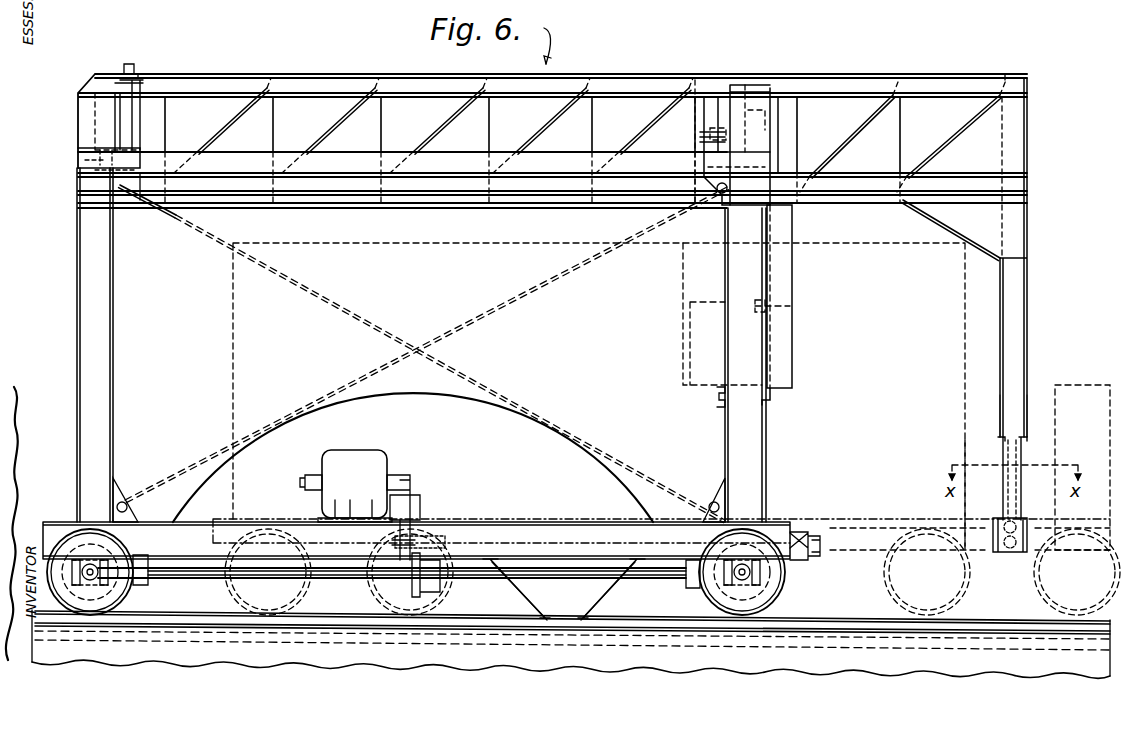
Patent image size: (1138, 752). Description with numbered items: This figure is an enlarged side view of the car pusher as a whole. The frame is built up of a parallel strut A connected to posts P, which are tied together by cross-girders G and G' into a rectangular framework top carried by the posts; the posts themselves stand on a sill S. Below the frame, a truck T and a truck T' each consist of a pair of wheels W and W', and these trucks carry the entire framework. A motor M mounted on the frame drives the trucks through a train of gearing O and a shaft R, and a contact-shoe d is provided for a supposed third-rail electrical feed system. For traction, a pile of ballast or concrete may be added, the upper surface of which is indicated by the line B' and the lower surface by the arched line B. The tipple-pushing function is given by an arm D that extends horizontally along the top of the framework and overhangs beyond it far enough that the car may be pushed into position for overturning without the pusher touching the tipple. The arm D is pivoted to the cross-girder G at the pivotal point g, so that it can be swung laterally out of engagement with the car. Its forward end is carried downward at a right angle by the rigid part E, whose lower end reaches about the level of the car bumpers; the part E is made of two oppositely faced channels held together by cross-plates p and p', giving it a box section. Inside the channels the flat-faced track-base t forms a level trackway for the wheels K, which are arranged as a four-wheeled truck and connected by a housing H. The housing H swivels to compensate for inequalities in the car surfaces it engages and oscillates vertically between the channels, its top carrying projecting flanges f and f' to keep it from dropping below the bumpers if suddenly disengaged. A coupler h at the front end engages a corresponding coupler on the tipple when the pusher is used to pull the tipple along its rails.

The parallel strut A is at (364, 161).
The lower surface line of ballast B is at (413, 434).
The upper surface line of ballast B' is at (552, 198).
The arm D is at (942, 72).
The rigid downward part E is at (1015, 349).
The cross-girder G is at (89, 140).
The cross-girder G' is at (758, 242).
The pivotal point g is at (137, 65).
The post P is at (98, 386).
The cross-plate p is at (982, 406).
The cross-plate p' is at (1044, 396).
The track-base t is at (1015, 451).
The housing H is at (1030, 532).
The track wheel K is at (1008, 522).
The projecting flange f is at (938, 495).
The projecting flange f' is at (1070, 467).
The coupler h is at (816, 535).
The sill S is at (576, 541).
The truck T is at (117, 558).
The truck T' is at (710, 561).
The wheel W is at (108, 572).
The wheel W' is at (724, 575).
The shaft R is at (352, 586).
The motor M is at (360, 486).
The train of gearing O is at (416, 543).
The contact-shoe d is at (555, 592).